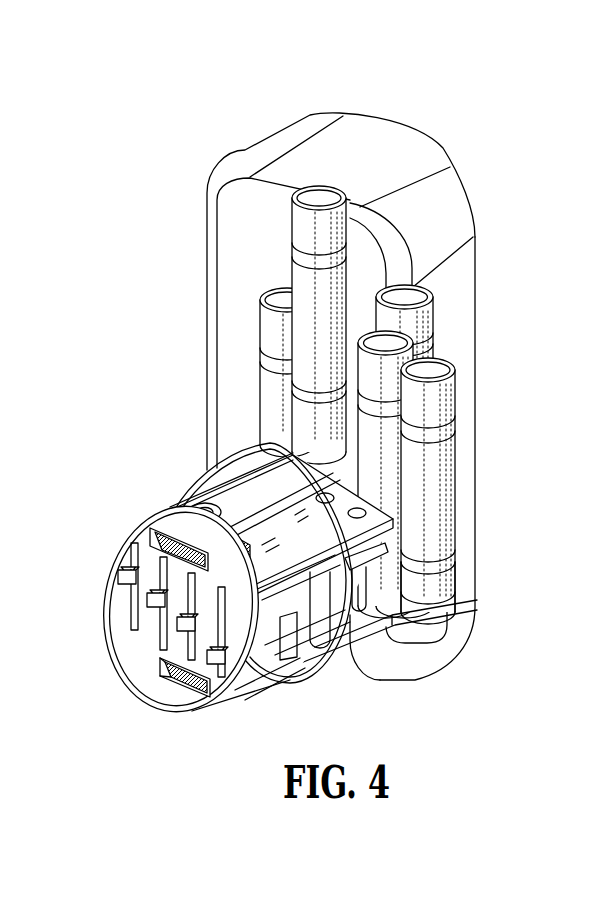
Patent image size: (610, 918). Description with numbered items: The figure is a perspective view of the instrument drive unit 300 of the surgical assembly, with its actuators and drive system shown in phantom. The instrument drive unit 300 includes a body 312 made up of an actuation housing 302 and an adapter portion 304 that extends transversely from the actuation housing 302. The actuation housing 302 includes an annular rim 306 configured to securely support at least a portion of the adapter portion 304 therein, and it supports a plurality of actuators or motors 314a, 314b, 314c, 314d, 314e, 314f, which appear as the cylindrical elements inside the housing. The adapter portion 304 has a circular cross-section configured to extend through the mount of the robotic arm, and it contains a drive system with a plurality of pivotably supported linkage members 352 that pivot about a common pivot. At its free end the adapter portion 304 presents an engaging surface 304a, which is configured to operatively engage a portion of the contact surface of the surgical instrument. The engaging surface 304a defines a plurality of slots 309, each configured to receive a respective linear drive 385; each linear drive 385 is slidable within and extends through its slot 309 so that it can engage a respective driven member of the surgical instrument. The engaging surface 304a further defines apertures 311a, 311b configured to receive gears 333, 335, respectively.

The instrument drive unit 300 is at (322, 413).
The actuation housing 302 is at (230, 297).
The adapter portion 304 is at (230, 580).
The engaging surface 304a is at (210, 712).
The annular rim 306 is at (340, 667).
The slot 309 is at (122, 544).
The aperture 311a is at (157, 533).
The aperture 311b is at (156, 664).
The body 312 is at (475, 238).
The actuator or motor 314a is at (260, 323).
The actuator or motor 314b is at (358, 320).
The actuator or motor 314c is at (440, 454).
The actuator or motor 314d is at (447, 507).
The actuator or motor 314e is at (358, 345).
The actuator or motor 314f is at (327, 233).
The gear 333 is at (177, 542).
The gear 335 is at (177, 684).
The pivotably supported linkage member 352 is at (289, 657).
The linear drive 385 is at (150, 609).